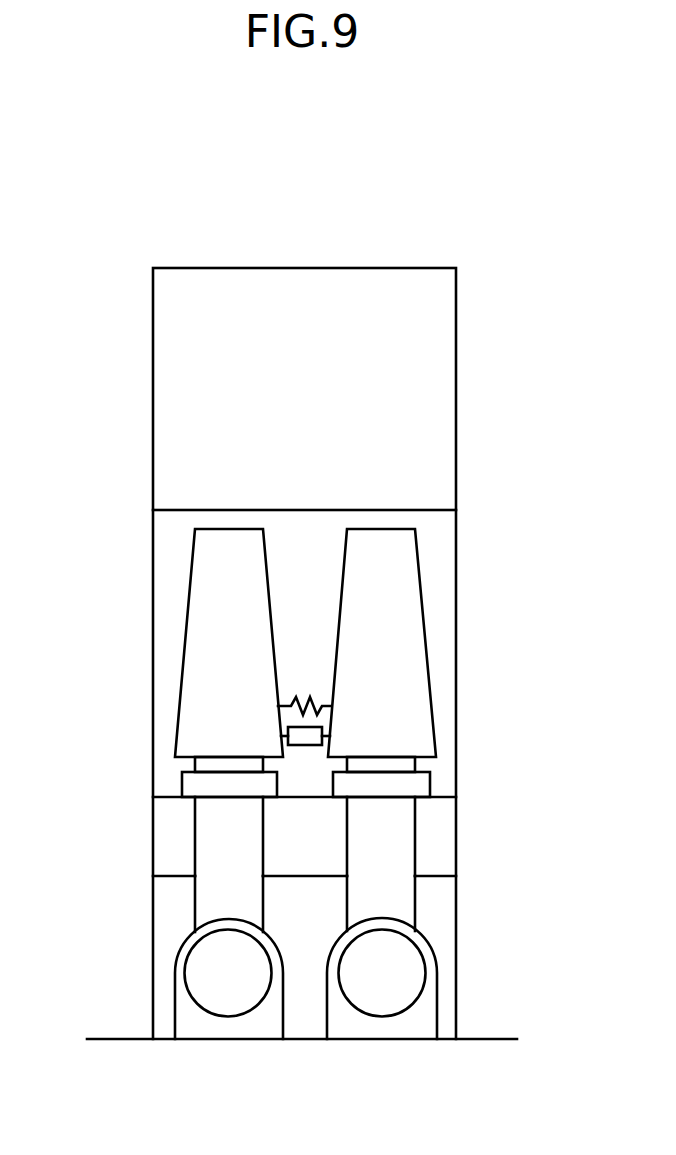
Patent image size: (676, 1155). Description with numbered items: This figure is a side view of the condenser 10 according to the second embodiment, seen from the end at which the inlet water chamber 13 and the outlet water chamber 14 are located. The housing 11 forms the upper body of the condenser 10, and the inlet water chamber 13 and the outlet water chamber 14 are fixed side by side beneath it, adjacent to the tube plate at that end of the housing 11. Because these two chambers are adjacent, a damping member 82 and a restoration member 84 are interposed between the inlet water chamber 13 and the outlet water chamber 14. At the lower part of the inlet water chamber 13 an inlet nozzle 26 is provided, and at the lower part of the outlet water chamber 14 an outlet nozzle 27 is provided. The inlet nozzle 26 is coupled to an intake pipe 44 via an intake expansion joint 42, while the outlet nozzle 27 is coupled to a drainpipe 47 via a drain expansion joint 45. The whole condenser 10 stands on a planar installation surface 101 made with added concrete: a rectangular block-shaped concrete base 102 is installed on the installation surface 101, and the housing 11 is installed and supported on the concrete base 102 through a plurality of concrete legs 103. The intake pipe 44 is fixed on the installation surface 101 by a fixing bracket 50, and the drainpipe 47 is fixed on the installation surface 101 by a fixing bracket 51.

The condenser 10 is at (503, 246).
The housing 11 is at (445, 393).
The inlet water chamber 13 is at (203, 570).
The outlet water chamber 14 is at (400, 570).
The inlet nozzle 26 is at (225, 765).
The outlet nozzle 27 is at (378, 765).
The intake expansion joint 42 is at (187, 785).
The drain expansion joint 45 is at (417, 785).
The restoration member 84 is at (308, 697).
The damping member 82 is at (308, 740).
The concrete leg 103 is at (442, 838).
The concrete base 102 is at (442, 902).
The fixing bracket 50 is at (183, 955).
The fixing bracket 51 is at (430, 953).
The intake pipe 44 is at (233, 983).
The drainpipe 47 is at (383, 983).
The installation surface 101 is at (470, 1039).